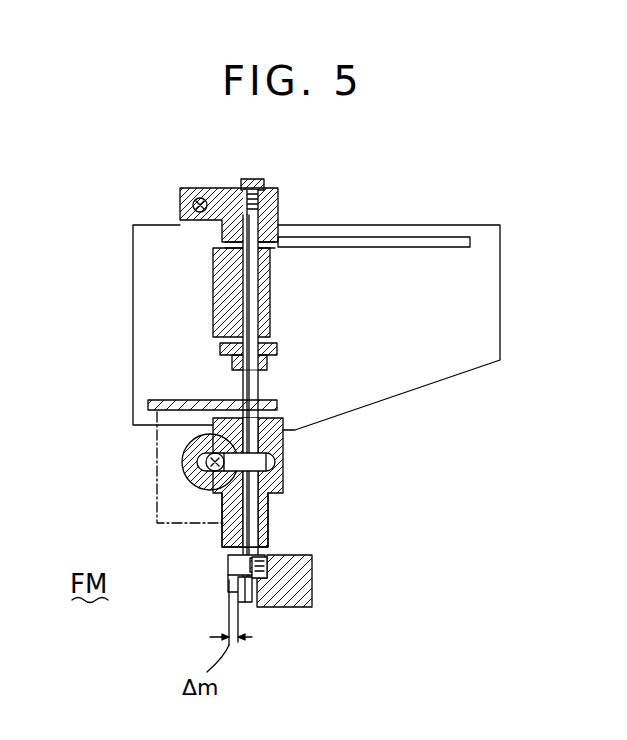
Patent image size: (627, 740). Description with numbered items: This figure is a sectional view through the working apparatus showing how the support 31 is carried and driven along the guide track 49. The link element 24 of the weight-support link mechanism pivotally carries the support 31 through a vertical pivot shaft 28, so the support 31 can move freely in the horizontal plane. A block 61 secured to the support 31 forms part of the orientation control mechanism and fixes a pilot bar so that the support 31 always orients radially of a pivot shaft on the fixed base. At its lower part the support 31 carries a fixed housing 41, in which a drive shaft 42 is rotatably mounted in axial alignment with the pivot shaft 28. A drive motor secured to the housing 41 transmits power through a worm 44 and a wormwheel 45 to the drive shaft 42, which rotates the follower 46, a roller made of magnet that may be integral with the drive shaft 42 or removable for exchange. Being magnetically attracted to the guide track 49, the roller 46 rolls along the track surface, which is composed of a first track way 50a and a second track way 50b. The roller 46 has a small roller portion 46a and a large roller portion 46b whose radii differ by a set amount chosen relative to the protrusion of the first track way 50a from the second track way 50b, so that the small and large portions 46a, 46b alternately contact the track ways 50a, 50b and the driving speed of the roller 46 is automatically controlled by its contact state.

The block 61 is at (243, 186).
The pivot shaft 28 is at (218, 300).
The link element 24 is at (218, 325).
The support 31 is at (490, 328).
The worm 44 is at (182, 462).
The wormwheel 45 is at (275, 462).
The housing 41 is at (283, 493).
The drive shaft 42 is at (268, 508).
The follower 46 is at (228, 580).
The large roller portion 46b is at (228, 563).
The small roller portion 46a is at (228, 592).
The second track way 50b is at (312, 557).
The guide track 49 is at (300, 588).
The first track way 50a is at (238, 605).